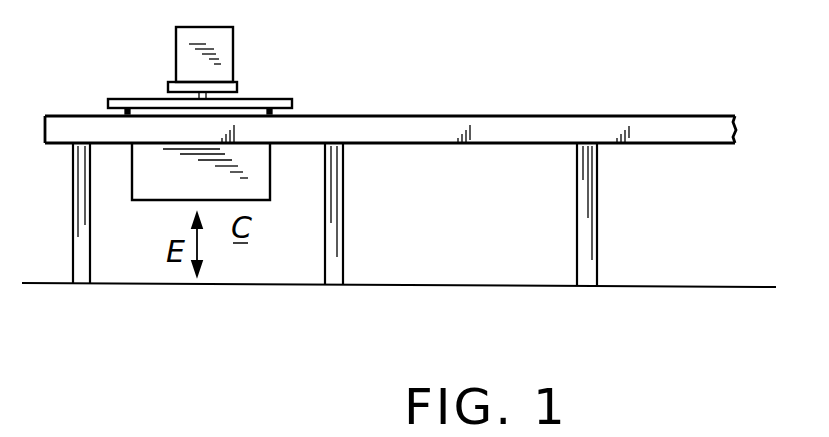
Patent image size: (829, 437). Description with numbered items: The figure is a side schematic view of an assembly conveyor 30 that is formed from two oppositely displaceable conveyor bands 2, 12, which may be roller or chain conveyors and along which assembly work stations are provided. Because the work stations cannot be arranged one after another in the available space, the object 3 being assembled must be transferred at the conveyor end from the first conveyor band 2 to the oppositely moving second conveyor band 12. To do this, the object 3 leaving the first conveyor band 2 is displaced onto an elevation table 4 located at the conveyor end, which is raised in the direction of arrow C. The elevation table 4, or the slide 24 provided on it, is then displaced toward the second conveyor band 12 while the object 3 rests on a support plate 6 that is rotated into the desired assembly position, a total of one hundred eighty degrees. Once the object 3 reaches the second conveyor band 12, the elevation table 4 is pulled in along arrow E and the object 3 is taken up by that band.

The conveyor band 2 is at (390, 102).
The conveyor band 12 is at (480, 117).
The slide 24 is at (285, 99).
The support plate 6 is at (168, 87).
The object 3 is at (233, 35).
The elevation table 4 is at (133, 200).
The assembly conveyor 30 is at (620, 97).